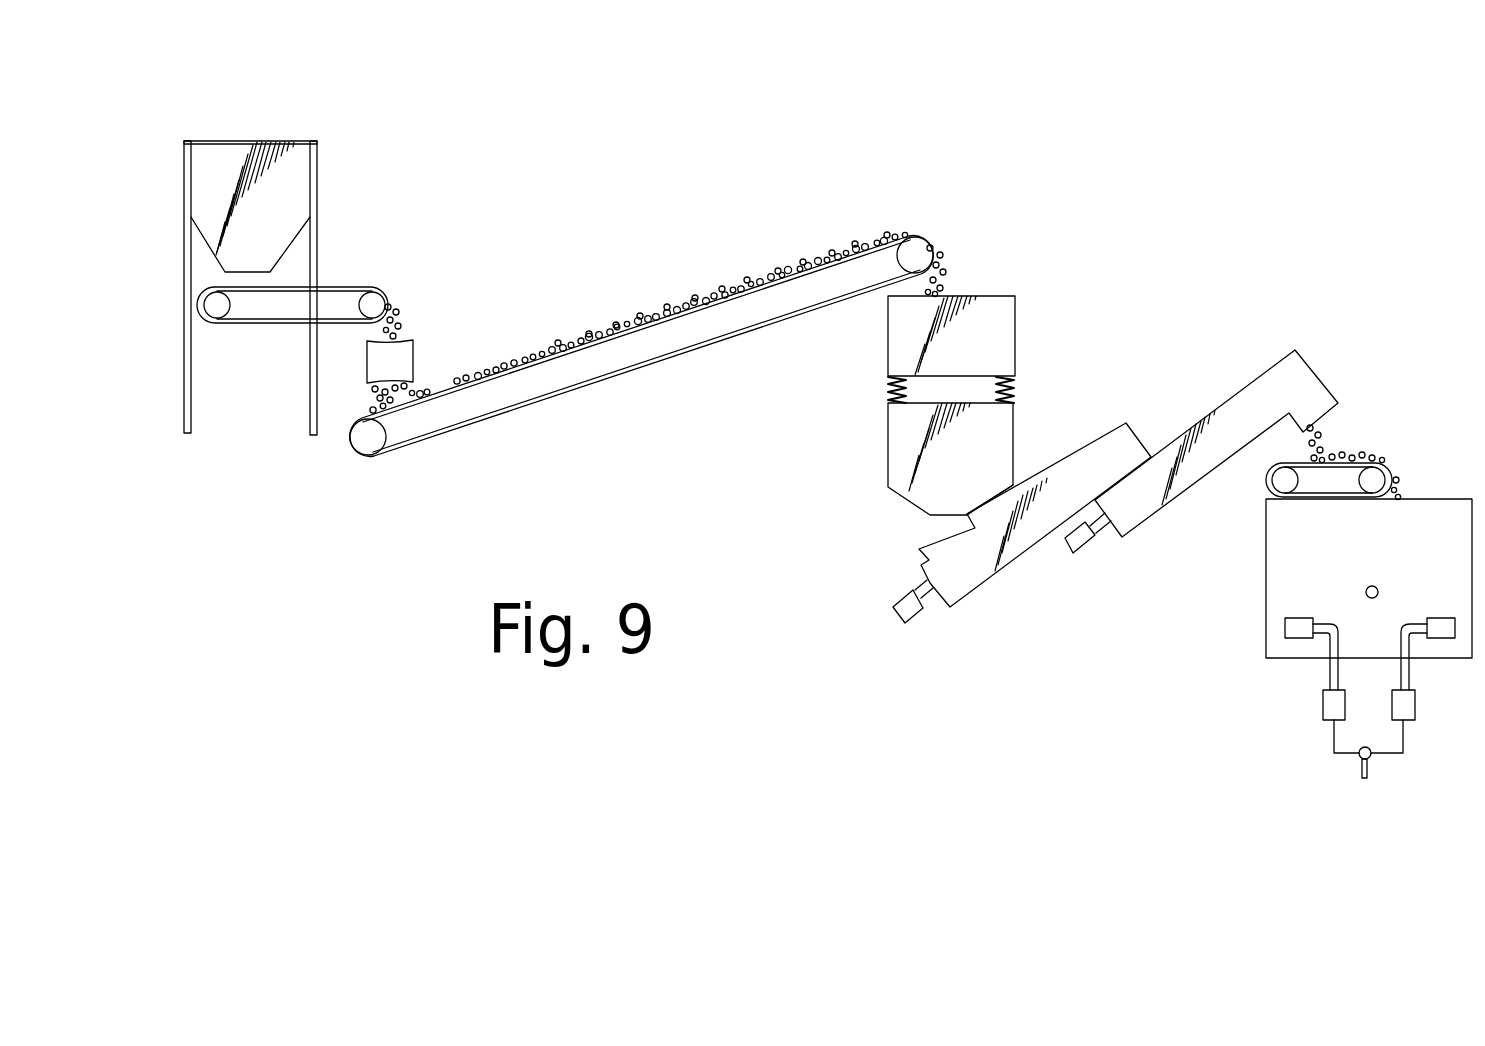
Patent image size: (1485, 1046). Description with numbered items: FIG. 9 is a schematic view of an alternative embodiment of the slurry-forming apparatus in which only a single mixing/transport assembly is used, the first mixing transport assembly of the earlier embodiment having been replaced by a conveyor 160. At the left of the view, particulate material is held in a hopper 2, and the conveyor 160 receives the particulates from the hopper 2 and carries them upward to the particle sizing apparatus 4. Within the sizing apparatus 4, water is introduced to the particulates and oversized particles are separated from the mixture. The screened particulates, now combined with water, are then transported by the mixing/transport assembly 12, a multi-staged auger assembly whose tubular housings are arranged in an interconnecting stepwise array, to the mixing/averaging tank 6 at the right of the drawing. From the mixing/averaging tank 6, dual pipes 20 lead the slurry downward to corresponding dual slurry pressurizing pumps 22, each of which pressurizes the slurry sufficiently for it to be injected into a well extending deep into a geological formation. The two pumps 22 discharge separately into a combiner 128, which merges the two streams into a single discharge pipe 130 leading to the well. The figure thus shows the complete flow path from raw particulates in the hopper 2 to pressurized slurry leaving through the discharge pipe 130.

The hopper 2 is at (317, 168).
The conveyor 160 is at (542, 400).
The particle sizing apparatus 4 is at (1022, 351).
The second mixing/transport assembly 12 is at (1066, 588).
The mixing/averaging tank 6 is at (1436, 476).
The dual pipes 20 is at (1330, 672).
The slurry pressurizing pumps 22 is at (1323, 705).
The combiner 128 is at (1359, 757).
The discharge pipe 130 is at (1370, 778).